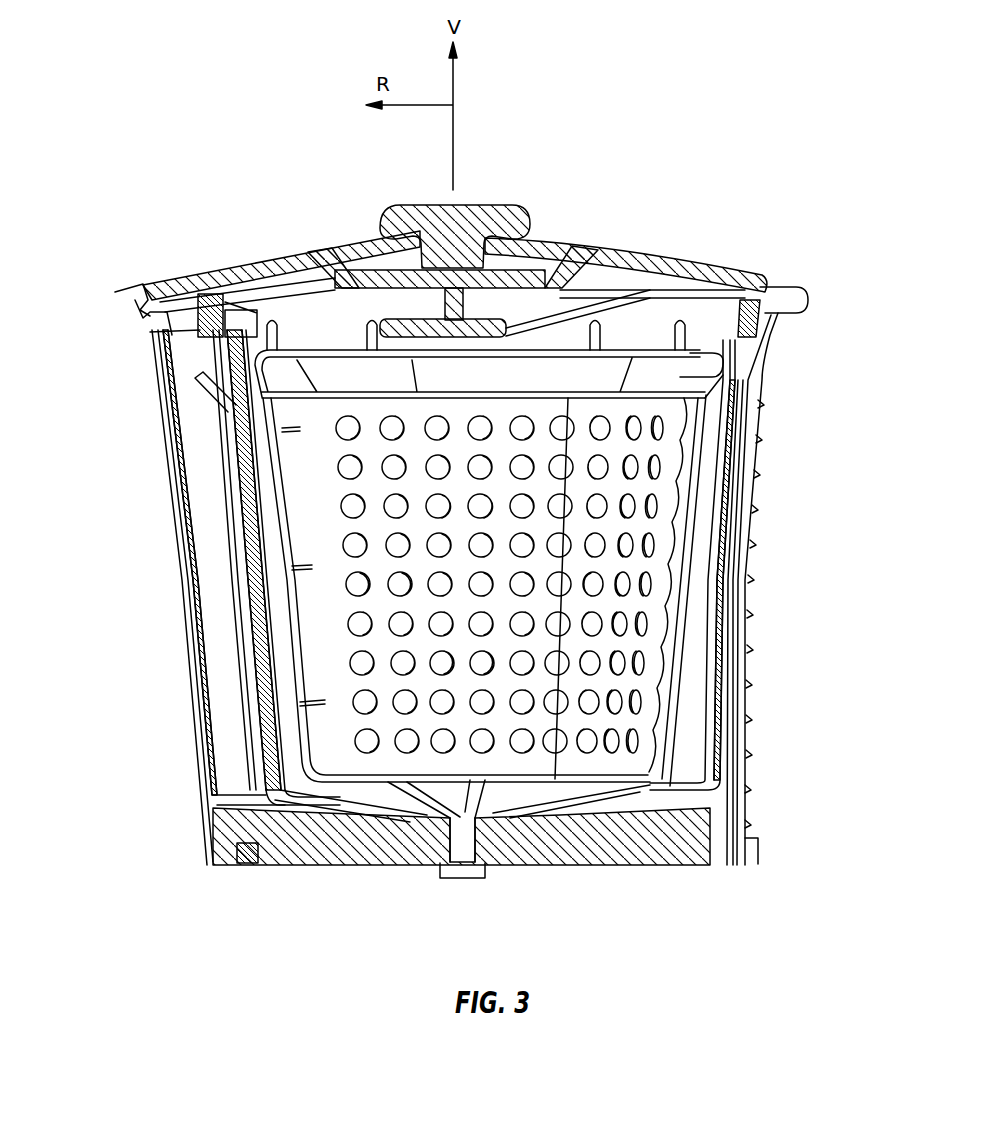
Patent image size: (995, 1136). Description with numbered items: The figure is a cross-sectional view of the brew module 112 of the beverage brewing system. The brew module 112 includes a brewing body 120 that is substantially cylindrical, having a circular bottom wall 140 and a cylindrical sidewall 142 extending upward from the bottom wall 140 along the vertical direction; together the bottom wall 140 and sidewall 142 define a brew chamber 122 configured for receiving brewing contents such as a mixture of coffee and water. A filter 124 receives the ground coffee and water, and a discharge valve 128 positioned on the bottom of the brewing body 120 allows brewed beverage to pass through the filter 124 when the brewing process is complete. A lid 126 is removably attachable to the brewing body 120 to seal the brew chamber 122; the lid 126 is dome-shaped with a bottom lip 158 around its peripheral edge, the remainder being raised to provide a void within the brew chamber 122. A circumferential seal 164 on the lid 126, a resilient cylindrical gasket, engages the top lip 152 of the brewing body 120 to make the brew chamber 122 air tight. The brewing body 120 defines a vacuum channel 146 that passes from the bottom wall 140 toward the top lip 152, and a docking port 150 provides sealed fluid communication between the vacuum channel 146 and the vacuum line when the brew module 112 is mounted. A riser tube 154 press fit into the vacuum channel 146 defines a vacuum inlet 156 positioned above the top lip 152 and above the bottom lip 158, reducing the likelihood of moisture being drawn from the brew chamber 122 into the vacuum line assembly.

The brew module 112 is at (127, 236).
The brewing body 120 is at (743, 560).
The brew chamber 122 is at (587, 727).
The filter 124 is at (688, 377).
The lid 126 is at (728, 272).
The discharge valve 128 is at (466, 880).
The bottom wall 140 is at (562, 866).
The sidewall 142 is at (190, 698).
The vacuum channel 146 is at (248, 733).
The docking port 150 is at (256, 868).
The top lip 152 is at (790, 300).
The riser tube 154 is at (243, 313).
The vacuum inlet 156 is at (208, 294).
The bottom lip 158 is at (133, 318).
The circumferential seal 164 is at (762, 300).